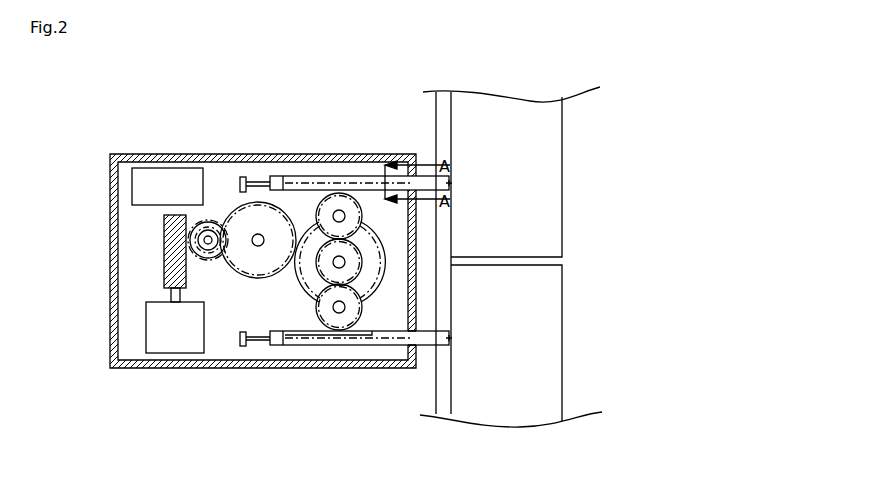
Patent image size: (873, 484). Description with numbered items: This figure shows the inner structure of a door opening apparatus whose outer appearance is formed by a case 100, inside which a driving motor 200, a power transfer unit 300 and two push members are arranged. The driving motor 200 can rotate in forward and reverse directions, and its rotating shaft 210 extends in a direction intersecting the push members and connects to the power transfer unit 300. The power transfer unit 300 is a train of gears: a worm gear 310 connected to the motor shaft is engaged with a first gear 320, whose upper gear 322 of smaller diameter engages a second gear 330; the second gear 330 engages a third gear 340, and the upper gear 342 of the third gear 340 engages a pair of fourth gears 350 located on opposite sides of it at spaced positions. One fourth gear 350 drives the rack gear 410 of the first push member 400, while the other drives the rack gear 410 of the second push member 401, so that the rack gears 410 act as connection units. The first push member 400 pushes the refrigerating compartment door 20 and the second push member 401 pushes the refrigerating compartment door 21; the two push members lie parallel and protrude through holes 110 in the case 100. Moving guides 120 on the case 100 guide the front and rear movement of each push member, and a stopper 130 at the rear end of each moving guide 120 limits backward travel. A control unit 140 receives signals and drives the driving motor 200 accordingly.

The case 100 is at (112, 190).
The hole 110 is at (423, 337).
The moving guide 120 is at (257, 341).
The stopper 130 is at (243, 338).
The control unit 140 is at (143, 177).
The driving motor 200 is at (165, 332).
The rotating shaft 210 is at (165, 293).
The power transfer unit 300 is at (352, 104).
The worm gear 310 is at (183, 226).
The first gear 320 is at (152, 184).
The upper gear 322 is at (196, 240).
The second gear 330 is at (272, 213).
The third gear 340 is at (370, 247).
The upper gear 342 is at (352, 268).
The fourth gear 350 is at (350, 255).
The first push member 400 is at (445, 338).
The second push member 401 is at (441, 183).
The rack gear 410 is at (447, 237).
The refrigerating compartment door 20 is at (552, 290).
The refrigerating compartment door 21 is at (552, 230).